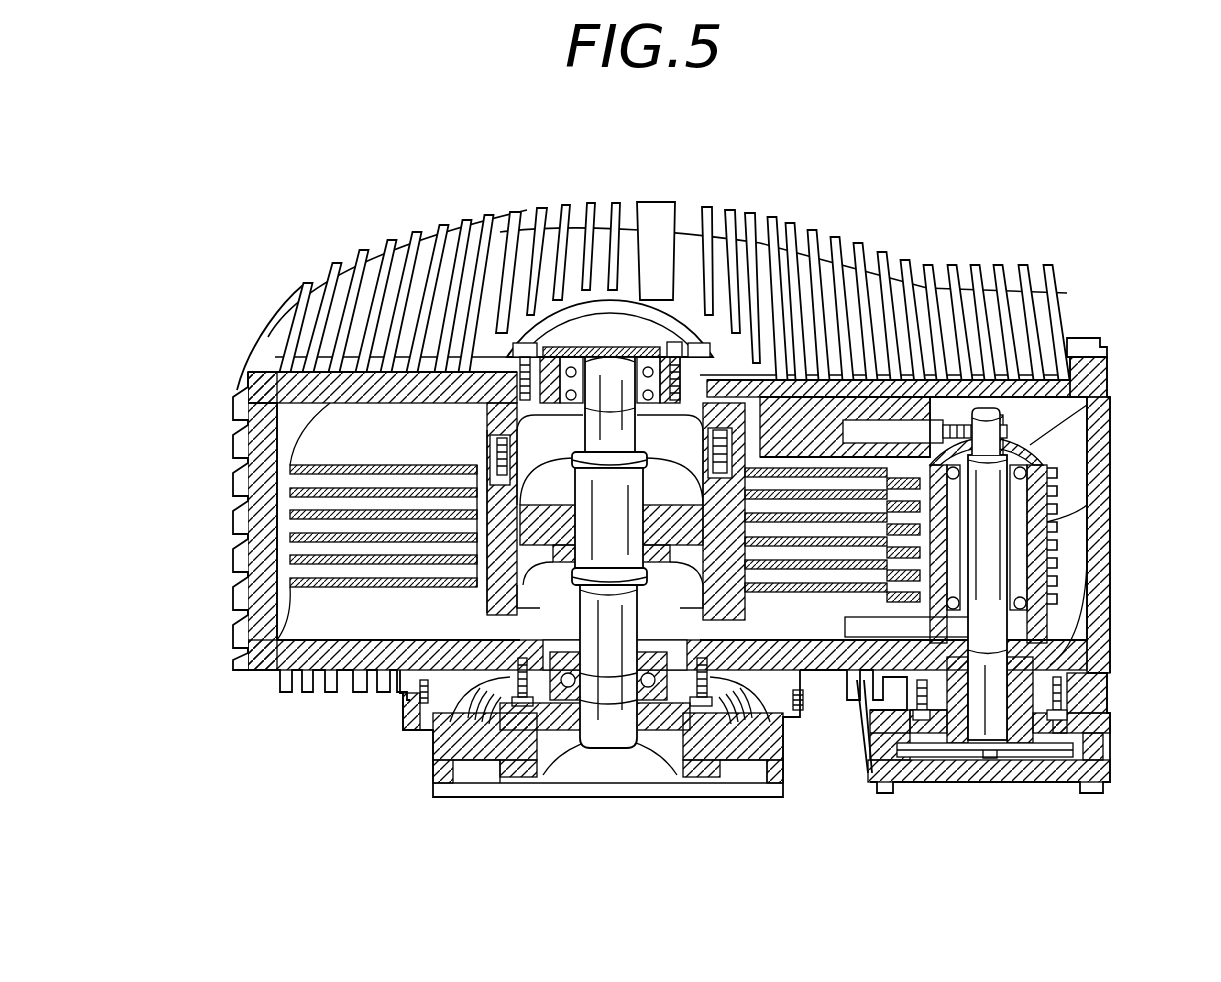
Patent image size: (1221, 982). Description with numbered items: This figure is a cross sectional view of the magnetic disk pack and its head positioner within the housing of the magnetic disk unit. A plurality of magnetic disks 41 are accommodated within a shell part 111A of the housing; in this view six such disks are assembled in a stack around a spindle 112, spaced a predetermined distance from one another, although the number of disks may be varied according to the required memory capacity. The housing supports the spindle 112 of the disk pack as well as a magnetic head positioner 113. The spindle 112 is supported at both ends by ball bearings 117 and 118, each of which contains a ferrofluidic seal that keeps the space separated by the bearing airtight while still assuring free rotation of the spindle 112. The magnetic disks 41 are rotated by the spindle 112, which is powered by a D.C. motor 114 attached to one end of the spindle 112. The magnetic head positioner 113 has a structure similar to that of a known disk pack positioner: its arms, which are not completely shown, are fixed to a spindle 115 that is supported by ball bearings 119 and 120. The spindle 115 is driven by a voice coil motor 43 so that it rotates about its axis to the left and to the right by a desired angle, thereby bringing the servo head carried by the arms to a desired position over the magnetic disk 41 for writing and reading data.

The magnetic disk 41 is at (400, 420).
The voice coil motor 43 is at (970, 782).
The shell part 111A is at (240, 437).
The spindle 112 is at (600, 372).
The magnetic head positioner 113 is at (1037, 787).
The D.C. motor 114 is at (480, 755).
The spindle 115 is at (1053, 520).
The ball bearing 117 is at (643, 372).
The ball bearing 118 is at (653, 728).
The ball bearing 119 is at (1040, 442).
The ball bearing 120 is at (1057, 553).